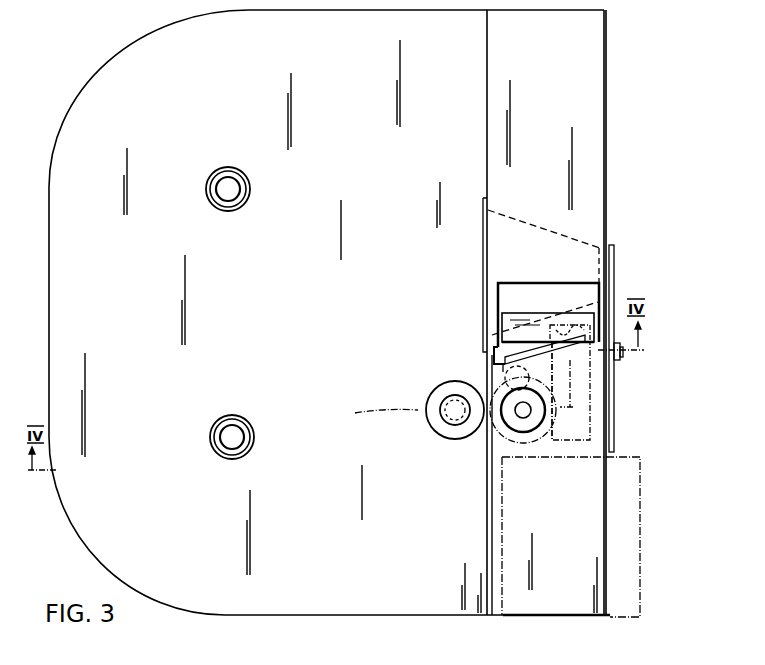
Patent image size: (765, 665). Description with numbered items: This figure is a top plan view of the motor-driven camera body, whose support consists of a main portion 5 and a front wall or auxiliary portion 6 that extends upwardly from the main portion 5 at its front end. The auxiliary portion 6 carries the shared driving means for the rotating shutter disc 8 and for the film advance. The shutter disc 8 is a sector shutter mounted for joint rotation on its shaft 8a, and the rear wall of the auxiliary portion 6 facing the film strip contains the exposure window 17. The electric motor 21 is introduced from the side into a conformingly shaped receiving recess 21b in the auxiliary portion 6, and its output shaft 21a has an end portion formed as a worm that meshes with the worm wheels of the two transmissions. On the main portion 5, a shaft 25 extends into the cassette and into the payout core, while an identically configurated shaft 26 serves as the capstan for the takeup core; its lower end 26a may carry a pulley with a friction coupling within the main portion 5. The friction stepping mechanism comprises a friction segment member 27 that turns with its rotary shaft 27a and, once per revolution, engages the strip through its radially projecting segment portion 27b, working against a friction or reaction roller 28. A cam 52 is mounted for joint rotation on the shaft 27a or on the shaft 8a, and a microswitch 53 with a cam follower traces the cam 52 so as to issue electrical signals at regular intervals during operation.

The main portion 5 is at (63, 319).
The auxiliary portion 6 is at (606, 110).
The shutter disc 8 is at (614, 249).
The shaft 8a is at (617, 359).
The exposure window 17 is at (504, 216).
The electric motor 21 is at (632, 457).
The output shaft 21a is at (577, 432).
The receiving recess 21b is at (497, 540).
The shaft 25 is at (229, 168).
The shaft 26 is at (236, 422).
The lower end of the capstan 26a is at (233, 450).
The friction segment member 27 is at (503, 435).
The rotary shaft 27a is at (523, 413).
The segment portion 27b is at (503, 378).
The friction roller 28 is at (434, 392).
The cam 52 is at (505, 400).
The microswitch 53 is at (570, 320).